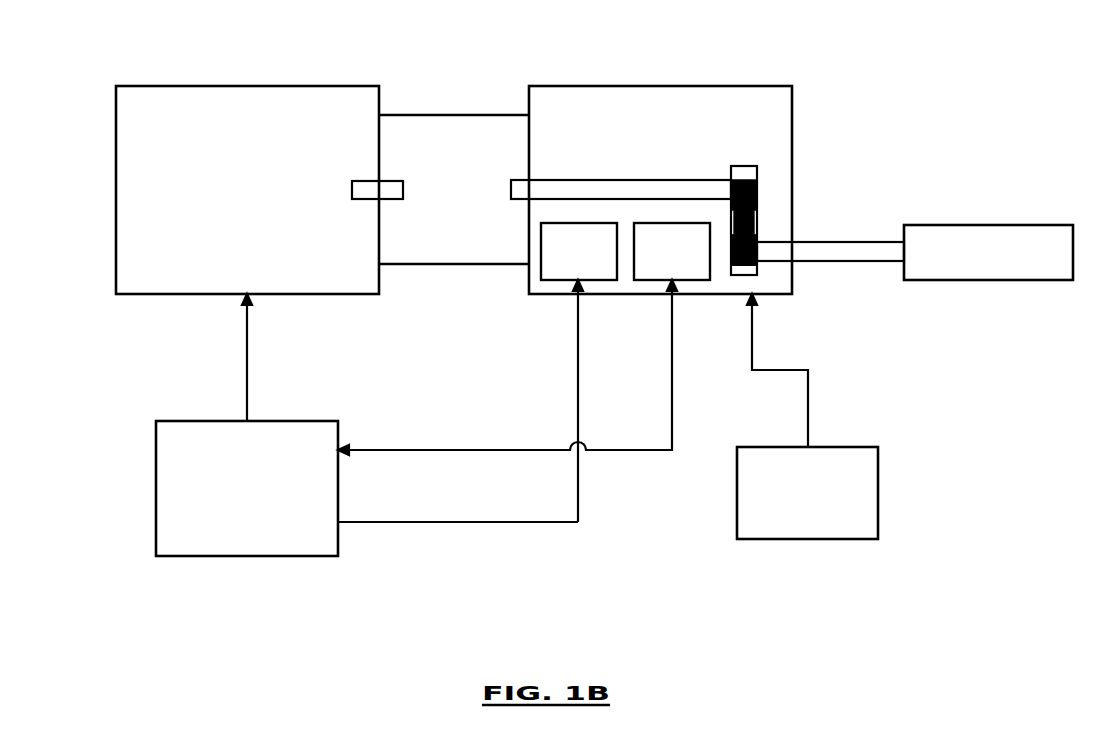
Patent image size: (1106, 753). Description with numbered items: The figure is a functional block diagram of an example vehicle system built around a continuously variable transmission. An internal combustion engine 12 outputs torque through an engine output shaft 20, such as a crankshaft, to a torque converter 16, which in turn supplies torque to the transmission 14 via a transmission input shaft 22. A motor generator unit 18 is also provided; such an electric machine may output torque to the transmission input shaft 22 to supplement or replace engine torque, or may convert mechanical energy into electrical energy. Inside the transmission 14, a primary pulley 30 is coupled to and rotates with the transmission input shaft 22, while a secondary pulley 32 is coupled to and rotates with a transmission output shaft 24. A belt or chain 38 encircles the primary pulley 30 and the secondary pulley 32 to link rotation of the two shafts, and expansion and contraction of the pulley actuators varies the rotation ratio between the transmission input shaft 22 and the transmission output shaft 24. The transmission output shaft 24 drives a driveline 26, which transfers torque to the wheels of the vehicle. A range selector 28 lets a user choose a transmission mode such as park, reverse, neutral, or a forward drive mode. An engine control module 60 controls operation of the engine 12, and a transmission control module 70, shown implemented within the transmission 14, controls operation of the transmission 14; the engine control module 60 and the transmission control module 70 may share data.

The internal combustion engine 12 is at (193, 86).
The transmission 14 is at (660, 86).
The torque converter 16 is at (452, 115).
The motor generator unit 18 is at (529, 267).
The engine output shaft 20 is at (370, 181).
The transmission input shaft 22 is at (579, 180).
The transmission output shaft 24 is at (858, 242).
The driveline 26 is at (986, 225).
The range selector 28 is at (806, 539).
The primary pulley 30 is at (757, 166).
The secondary pulley 32 is at (758, 276).
The belt or chain 38 is at (757, 220).
The engine control module 60 is at (247, 556).
The transmission control module 70 is at (689, 281).